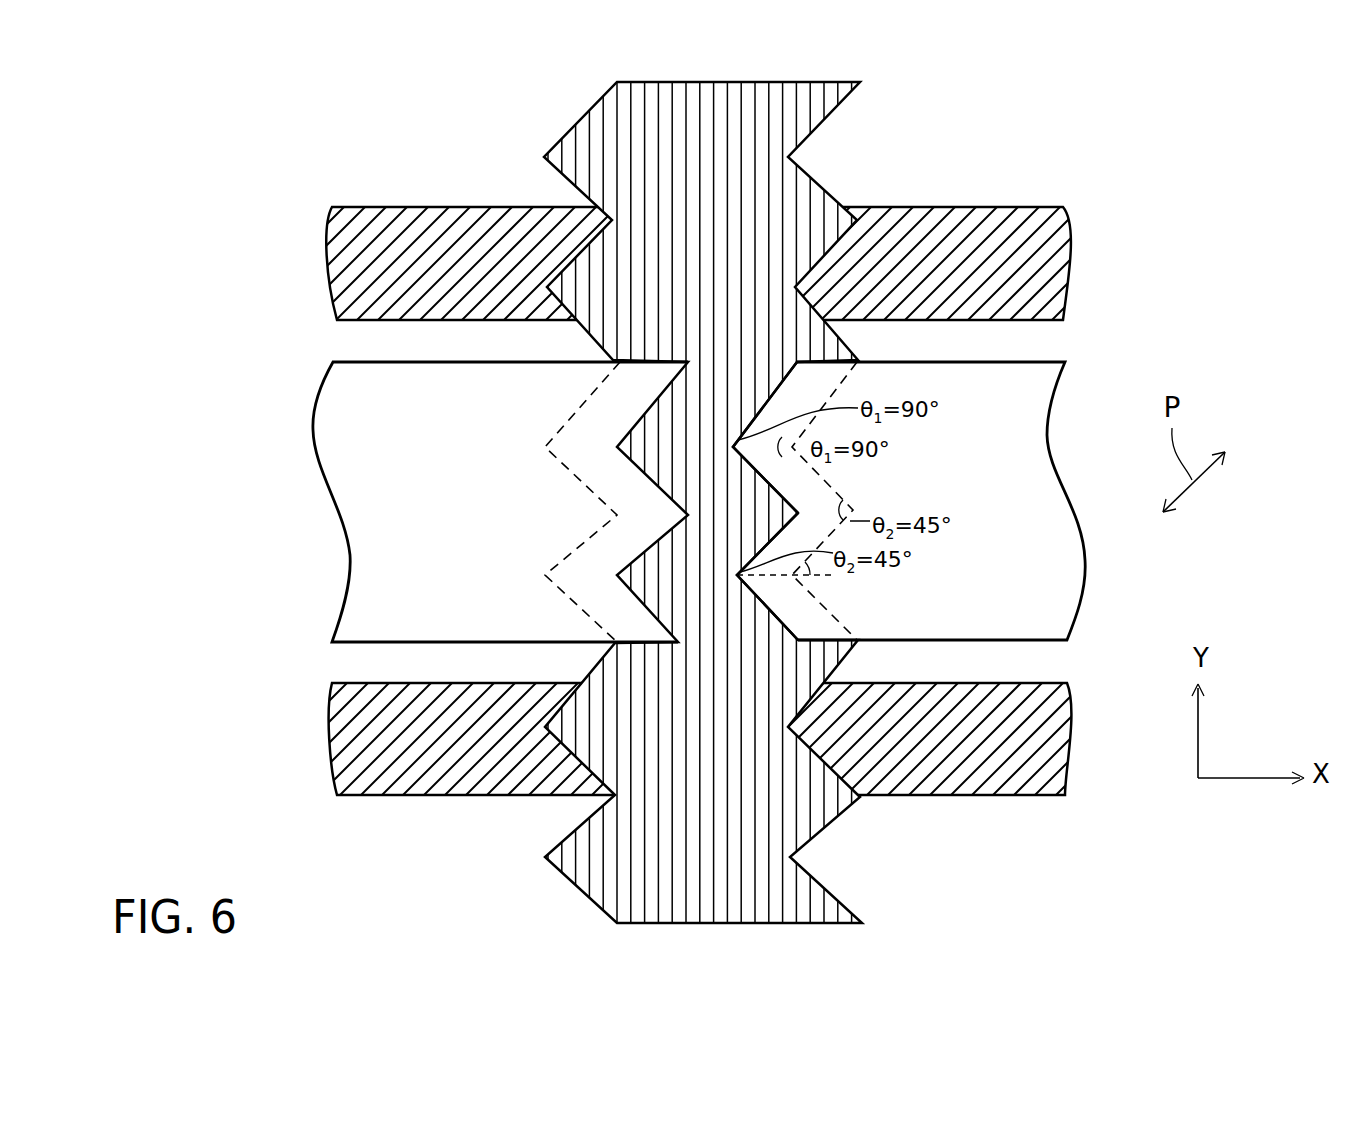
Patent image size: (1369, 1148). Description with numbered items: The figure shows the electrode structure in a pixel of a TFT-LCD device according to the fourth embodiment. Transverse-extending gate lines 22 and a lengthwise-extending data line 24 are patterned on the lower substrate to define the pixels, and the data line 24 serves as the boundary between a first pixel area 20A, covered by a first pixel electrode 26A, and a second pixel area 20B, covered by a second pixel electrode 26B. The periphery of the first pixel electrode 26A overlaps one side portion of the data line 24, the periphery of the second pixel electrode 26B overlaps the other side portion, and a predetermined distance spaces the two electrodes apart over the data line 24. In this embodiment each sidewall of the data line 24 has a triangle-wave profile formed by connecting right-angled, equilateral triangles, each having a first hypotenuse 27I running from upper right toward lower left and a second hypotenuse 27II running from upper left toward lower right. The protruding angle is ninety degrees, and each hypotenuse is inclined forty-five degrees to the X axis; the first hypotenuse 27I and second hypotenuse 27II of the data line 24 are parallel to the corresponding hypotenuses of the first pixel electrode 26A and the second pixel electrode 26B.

The first pixel area 20A is at (1077, 360).
The second pixel area 20B is at (316, 360).
The gate line 22 is at (953, 225).
The data line 24 is at (600, 117).
The first pixel electrode 26A is at (998, 484).
The second pixel electrode 26B is at (433, 484).
The first hypotenuse 27I is at (843, 382).
The second hypotenuse 27II is at (840, 493).